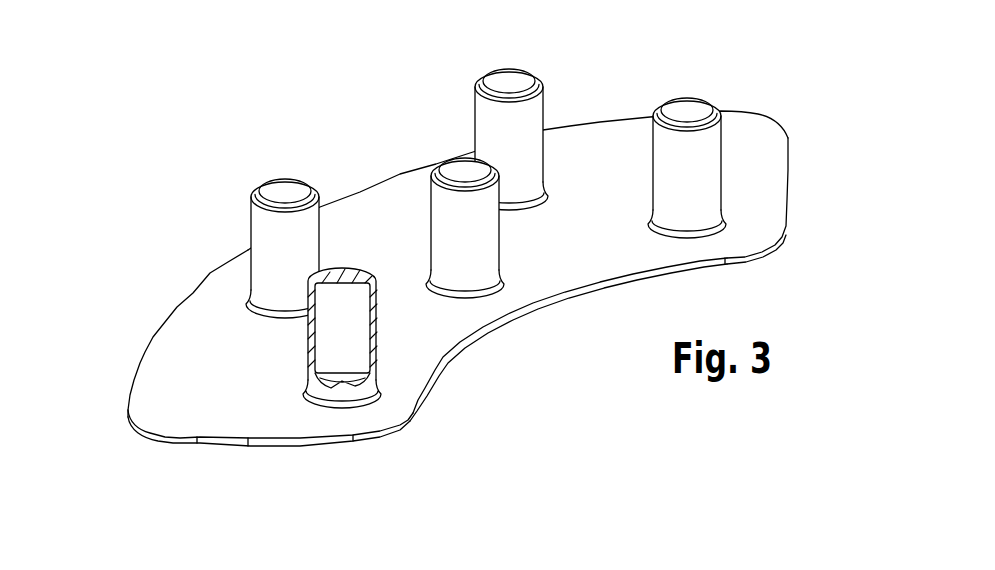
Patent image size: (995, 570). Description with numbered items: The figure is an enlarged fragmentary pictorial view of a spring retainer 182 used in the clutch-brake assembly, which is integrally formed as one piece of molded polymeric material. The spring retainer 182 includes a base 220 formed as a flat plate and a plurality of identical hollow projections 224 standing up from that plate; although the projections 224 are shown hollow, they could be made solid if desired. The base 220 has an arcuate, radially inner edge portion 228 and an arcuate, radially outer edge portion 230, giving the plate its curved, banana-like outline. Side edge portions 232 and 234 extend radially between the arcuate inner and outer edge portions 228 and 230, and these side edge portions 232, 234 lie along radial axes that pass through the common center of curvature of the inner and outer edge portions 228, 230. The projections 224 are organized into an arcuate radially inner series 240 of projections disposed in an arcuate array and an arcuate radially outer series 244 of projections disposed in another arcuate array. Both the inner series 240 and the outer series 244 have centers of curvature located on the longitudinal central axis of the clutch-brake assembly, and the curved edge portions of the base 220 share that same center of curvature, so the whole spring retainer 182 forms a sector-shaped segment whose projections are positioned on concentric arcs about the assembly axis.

The spring retainer 182 is at (474, 259).
The base 220 is at (474, 273).
The hollow projections 224 is at (514, 204).
The radially inner edge portion 228 is at (537, 304).
The radially outer edge portion 230 is at (602, 124).
The side edge portion 232 is at (248, 447).
The side edge portion 234 is at (788, 198).
The radially inner series of projections 240 is at (722, 155).
The radially outer series of projections 244 is at (250, 222).